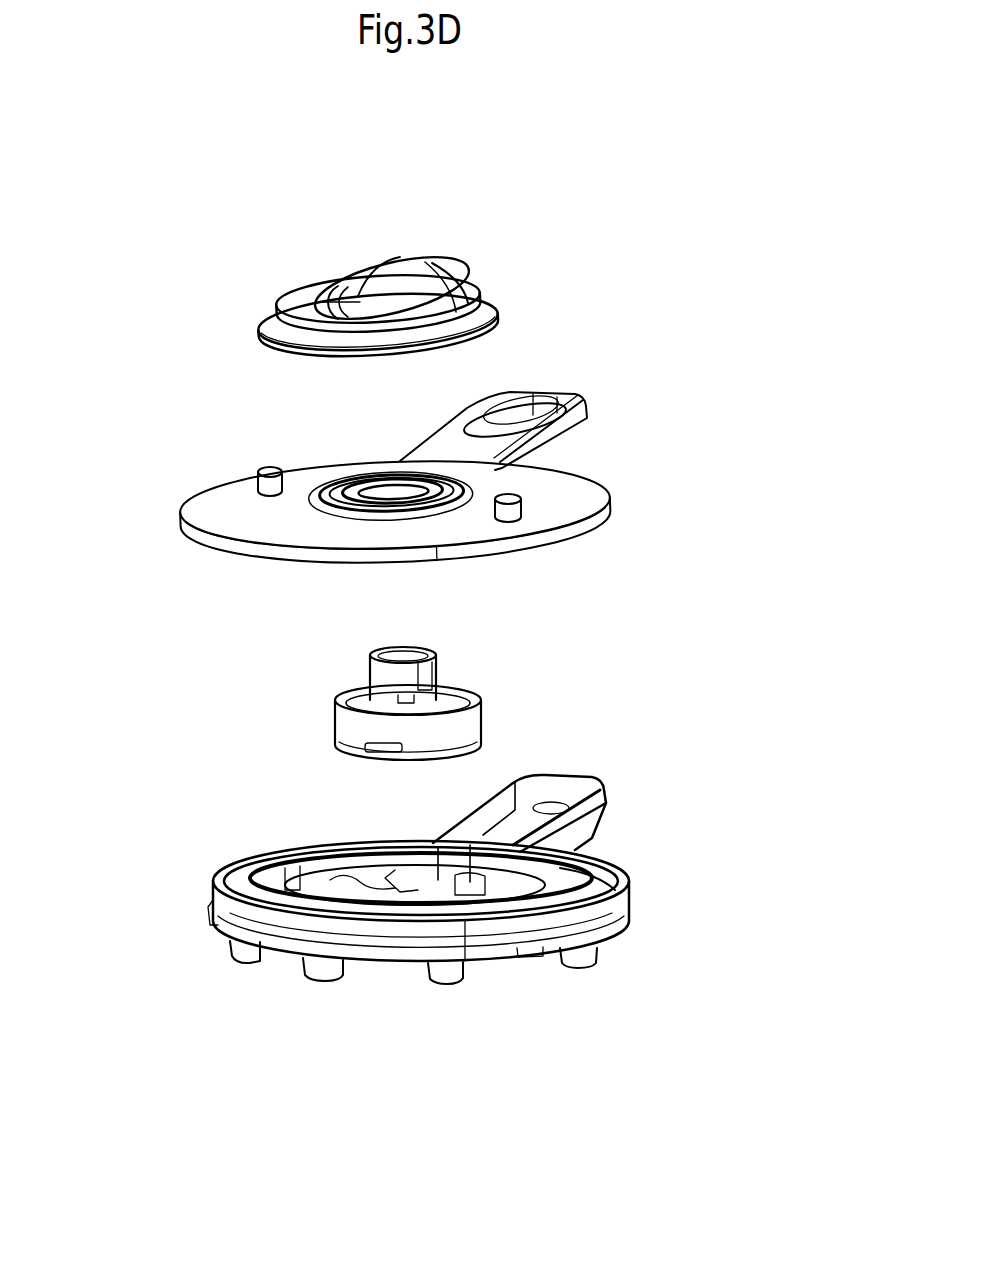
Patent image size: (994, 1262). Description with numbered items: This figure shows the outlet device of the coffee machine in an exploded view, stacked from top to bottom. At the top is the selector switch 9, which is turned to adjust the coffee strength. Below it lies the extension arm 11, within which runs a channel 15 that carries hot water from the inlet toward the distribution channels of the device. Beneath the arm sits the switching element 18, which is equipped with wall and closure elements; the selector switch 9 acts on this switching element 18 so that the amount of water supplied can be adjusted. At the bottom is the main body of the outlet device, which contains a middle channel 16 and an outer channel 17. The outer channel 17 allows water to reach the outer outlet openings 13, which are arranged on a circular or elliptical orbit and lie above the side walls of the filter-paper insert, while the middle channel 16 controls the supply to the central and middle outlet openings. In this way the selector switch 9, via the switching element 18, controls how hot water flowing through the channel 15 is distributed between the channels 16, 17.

The selector switch 9 is at (362, 272).
The extension arm 11 is at (500, 442).
The outer outlet openings 13 is at (445, 968).
The channel 15 is at (520, 832).
The middle channel 16 is at (253, 865).
The outer channel 17 is at (598, 879).
The switching element 18 is at (450, 730).